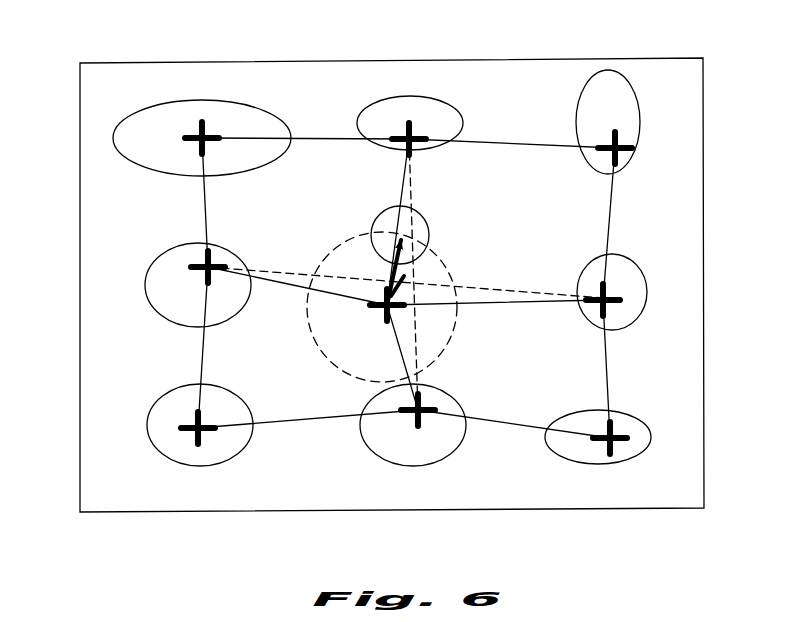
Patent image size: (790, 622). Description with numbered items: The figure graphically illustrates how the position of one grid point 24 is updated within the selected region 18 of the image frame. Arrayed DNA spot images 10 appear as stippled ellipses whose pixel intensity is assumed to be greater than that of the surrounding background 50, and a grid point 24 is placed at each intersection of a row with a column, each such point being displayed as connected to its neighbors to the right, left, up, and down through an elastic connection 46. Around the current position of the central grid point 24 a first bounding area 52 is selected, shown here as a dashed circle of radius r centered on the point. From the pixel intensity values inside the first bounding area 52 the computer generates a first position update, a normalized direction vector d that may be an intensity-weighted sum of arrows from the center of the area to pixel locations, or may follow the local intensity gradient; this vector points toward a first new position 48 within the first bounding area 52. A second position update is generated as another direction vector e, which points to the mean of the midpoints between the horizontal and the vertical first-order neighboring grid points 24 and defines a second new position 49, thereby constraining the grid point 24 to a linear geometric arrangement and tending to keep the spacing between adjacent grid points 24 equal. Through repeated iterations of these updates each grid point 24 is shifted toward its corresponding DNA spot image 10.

The DNA spot image 10 is at (585, 84).
The selected set of image information 18 is at (80, 425).
The grid point 24 is at (620, 143).
The elastic connection 46 is at (614, 219).
The first new position 48 is at (399, 225).
The second new position 49 is at (415, 269).
The background 50 is at (666, 343).
The first bounding area 52 is at (323, 249).
The direction vector d is at (428, 242).
The direction vector e is at (414, 295).